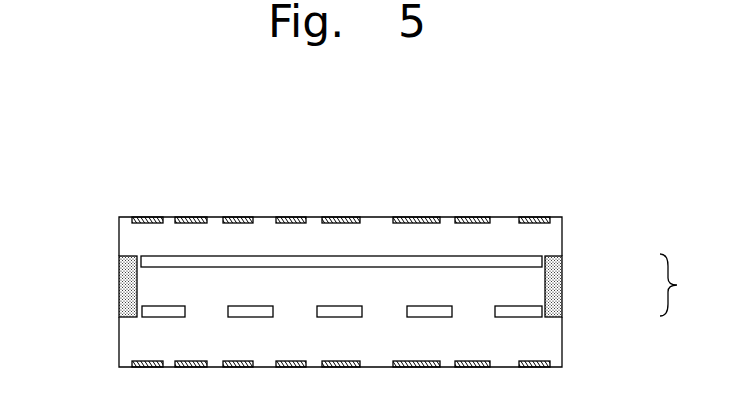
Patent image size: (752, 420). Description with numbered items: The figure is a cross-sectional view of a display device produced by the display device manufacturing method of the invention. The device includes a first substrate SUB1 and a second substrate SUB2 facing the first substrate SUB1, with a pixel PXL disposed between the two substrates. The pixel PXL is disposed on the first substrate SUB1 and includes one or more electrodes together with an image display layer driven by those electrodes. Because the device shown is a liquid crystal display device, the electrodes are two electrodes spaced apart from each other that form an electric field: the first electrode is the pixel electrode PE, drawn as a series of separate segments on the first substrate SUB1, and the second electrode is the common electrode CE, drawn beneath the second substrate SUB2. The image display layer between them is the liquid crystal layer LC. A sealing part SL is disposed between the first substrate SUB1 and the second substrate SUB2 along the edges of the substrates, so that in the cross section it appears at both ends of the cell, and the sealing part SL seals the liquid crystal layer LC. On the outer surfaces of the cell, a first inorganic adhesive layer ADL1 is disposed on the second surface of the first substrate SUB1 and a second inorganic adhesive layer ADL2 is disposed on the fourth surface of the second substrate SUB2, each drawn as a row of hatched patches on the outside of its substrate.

The second inorganic adhesive layer ADL2 is at (536, 221).
The second substrate SUB2 is at (548, 239).
The common electrode CE is at (530, 263).
The liquid crystal layer LC is at (529, 283).
The pixel electrode PE is at (528, 313).
The first substrate SUB1 is at (548, 337).
The first inorganic adhesive layer ADL1 is at (537, 363).
The sealing part SL is at (129, 279).
The pixel PXL is at (689, 285).